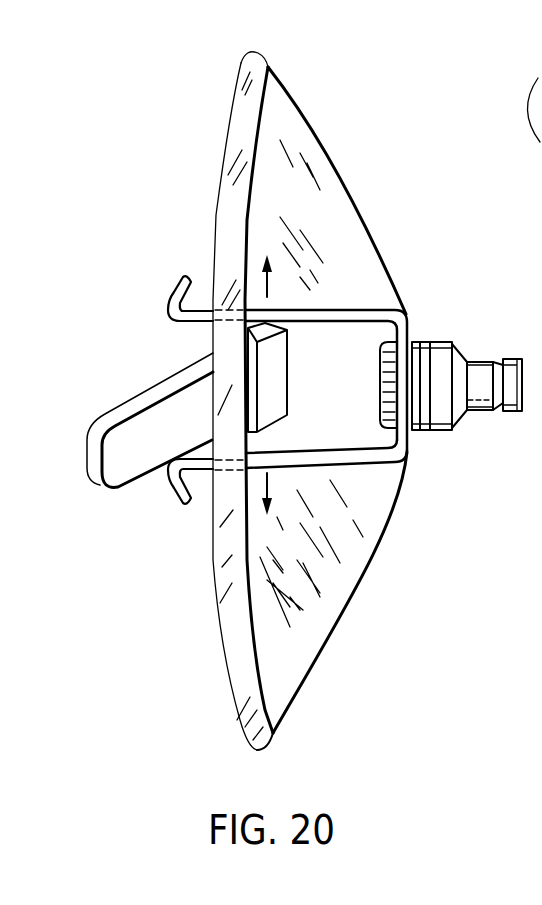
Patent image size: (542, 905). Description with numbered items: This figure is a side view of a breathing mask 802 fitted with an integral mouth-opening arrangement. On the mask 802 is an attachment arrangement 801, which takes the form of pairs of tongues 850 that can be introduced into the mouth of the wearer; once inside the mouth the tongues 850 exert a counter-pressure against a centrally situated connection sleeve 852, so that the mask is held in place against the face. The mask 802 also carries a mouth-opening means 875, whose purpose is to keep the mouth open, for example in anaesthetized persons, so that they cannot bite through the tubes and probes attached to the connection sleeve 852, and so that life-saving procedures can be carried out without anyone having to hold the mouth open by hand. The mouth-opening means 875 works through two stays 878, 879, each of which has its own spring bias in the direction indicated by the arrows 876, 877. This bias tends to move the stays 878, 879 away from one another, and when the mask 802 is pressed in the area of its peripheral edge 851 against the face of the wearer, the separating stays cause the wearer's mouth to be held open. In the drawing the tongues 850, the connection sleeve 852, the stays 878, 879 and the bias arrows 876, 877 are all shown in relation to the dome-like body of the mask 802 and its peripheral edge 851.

The attachment arrangement 801 is at (137, 500).
The mask 802 is at (343, 187).
The tongues 850 is at (133, 398).
The peripheral edge 851 is at (233, 675).
The connection sleeve 852 is at (480, 368).
The mouth-opening means 875 is at (173, 284).
The arrow 876 is at (270, 287).
The arrow 877 is at (263, 477).
The stay 878 is at (340, 320).
The stay 879 is at (368, 460).